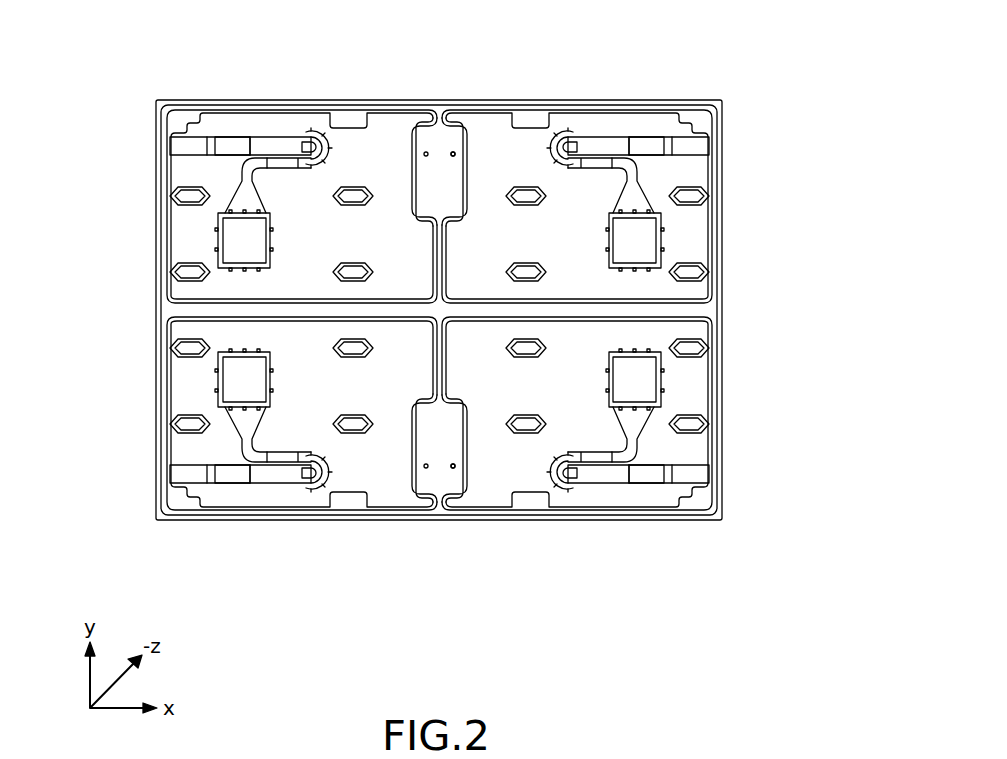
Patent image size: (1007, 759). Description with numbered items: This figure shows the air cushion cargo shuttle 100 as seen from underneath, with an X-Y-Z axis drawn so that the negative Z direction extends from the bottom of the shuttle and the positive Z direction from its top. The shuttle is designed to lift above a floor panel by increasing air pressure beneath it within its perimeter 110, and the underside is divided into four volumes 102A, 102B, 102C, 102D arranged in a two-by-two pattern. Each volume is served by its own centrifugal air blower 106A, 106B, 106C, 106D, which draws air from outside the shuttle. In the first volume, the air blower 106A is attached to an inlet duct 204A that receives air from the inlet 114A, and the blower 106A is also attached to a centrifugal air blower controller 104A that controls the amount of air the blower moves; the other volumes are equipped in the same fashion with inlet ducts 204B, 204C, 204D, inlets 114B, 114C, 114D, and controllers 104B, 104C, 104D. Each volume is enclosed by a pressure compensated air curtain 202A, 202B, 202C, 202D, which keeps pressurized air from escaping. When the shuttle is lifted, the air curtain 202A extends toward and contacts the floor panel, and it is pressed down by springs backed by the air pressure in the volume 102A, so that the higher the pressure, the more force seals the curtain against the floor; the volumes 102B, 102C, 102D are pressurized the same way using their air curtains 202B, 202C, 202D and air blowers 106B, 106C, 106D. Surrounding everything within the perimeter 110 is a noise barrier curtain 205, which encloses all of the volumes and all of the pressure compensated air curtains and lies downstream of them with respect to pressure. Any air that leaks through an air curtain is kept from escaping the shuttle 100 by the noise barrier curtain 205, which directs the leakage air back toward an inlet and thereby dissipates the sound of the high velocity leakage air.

The air cushion cargo shuttle 100 is at (710, 68).
The perimeter 110 is at (161, 517).
The noise barrier curtain 205 is at (718, 498).
The volume 102A is at (205, 335).
The volume 102B is at (186, 131).
The volume 102C is at (690, 290).
The volume 102D is at (546, 492).
The centrifugal air blower controller 104A is at (240, 388).
The centrifugal air blower controller 104B is at (240, 229).
The centrifugal air blower controller 104C is at (648, 233).
The centrifugal air blower controller 104D is at (650, 388).
The centrifugal air blower 106A is at (303, 485).
The centrifugal air blower 106B is at (305, 150).
The centrifugal air blower 106C is at (573, 133).
The centrifugal air blower 106D is at (583, 487).
The inlet 114A is at (168, 474).
The inlet 114B is at (168, 150).
The inlet 114C is at (722, 143).
The inlet 114D is at (722, 466).
The pressure compensated air curtain 202A is at (422, 472).
The pressure compensated air curtain 202B is at (428, 137).
The pressure compensated air curtain 202C is at (438, 132).
The pressure compensated air curtain 202D is at (463, 477).
The inlet duct 204A is at (268, 477).
The inlet duct 204B is at (260, 143).
The inlet duct 204C is at (642, 143).
The inlet duct 204D is at (673, 476).